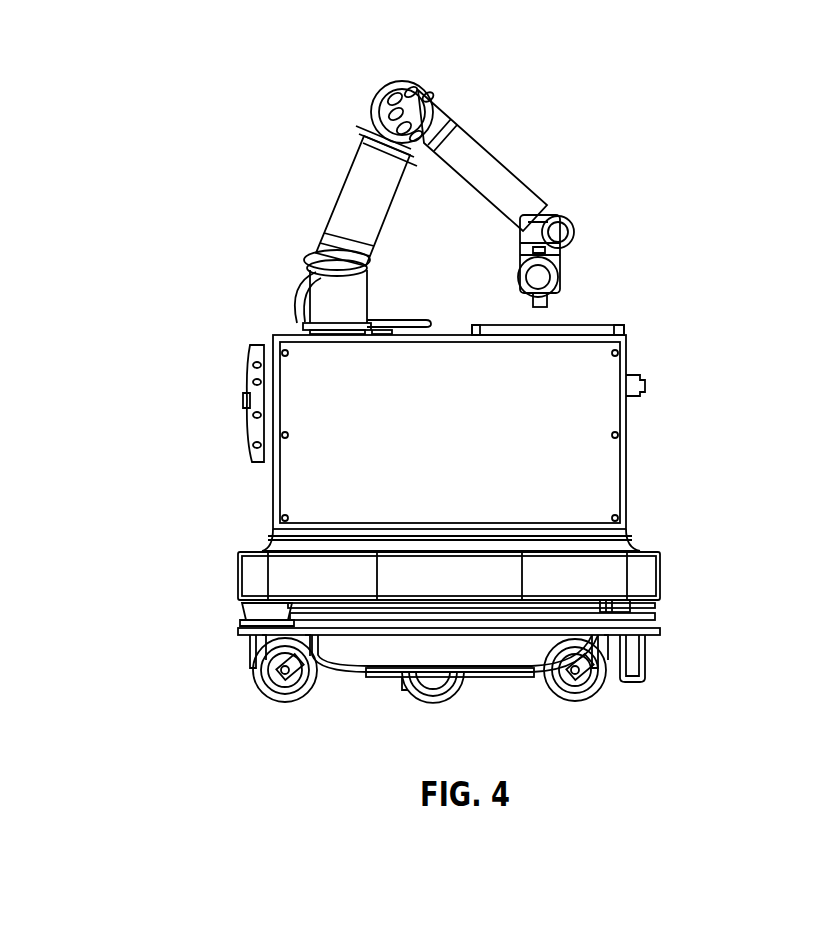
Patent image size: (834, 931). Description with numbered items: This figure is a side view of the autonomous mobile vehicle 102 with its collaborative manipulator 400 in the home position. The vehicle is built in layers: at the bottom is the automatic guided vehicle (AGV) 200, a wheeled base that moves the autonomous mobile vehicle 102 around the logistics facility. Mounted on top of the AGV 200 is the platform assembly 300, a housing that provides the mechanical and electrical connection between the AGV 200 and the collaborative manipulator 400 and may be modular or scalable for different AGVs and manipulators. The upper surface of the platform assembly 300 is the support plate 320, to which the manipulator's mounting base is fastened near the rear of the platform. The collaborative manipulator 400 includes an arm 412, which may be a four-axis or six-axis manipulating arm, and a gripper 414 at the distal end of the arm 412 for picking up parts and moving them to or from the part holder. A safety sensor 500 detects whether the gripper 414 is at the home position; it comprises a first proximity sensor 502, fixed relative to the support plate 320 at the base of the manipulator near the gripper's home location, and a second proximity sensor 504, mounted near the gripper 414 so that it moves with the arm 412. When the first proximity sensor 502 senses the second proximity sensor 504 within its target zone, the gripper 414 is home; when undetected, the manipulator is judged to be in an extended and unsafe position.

The autonomous mobile vehicle 102 is at (676, 211).
The automatic guided vehicle (AGV) 200 is at (231, 620).
The platform assembly 300 is at (660, 443).
The support plate 320 is at (455, 335).
The collaborative manipulator 400 is at (506, 123).
The arm 412 is at (499, 172).
The gripper 414 is at (548, 300).
The safety sensor 500 is at (369, 332).
The first proximity sensor 502 is at (313, 266).
The second proximity sensor 504 is at (519, 275).